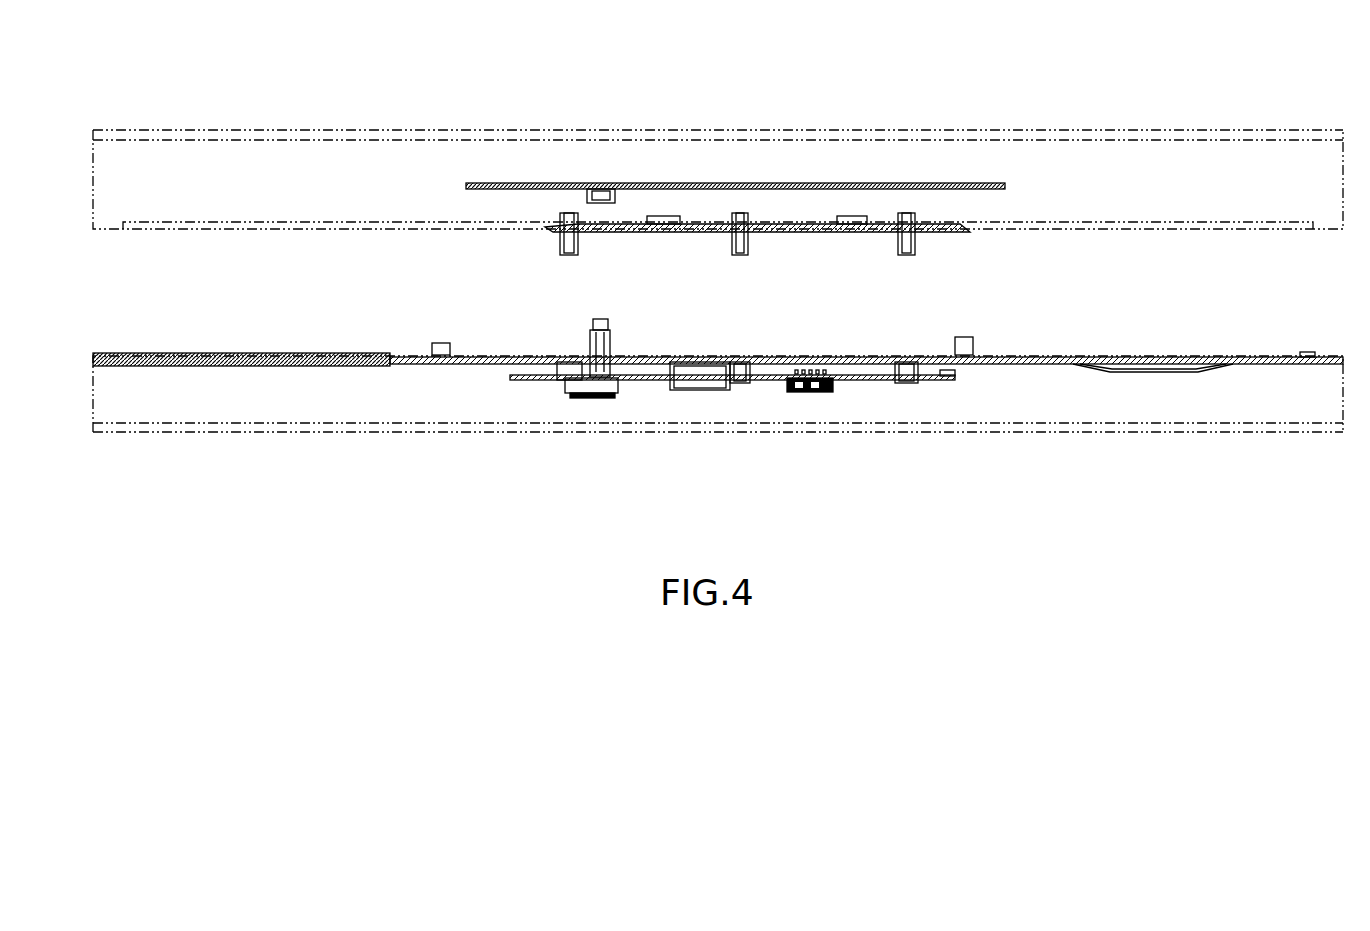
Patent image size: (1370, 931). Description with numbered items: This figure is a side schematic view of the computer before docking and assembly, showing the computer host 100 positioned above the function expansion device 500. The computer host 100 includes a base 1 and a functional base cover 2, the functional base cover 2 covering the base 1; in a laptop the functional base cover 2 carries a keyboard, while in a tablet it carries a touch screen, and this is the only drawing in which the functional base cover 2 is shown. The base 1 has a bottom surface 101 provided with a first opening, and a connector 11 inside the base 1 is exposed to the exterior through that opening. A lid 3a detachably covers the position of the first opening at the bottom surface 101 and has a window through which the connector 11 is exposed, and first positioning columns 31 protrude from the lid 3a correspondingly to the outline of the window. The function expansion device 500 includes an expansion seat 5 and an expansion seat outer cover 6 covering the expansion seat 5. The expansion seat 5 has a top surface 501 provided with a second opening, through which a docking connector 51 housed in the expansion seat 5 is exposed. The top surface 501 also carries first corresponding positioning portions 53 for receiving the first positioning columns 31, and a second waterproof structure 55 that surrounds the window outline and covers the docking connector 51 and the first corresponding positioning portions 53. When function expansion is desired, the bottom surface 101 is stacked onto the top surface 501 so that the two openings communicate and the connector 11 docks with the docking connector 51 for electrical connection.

The computer host 100 is at (120, 55).
The base 1 is at (177, 157).
The functional base cover 2 is at (247, 133).
The bottom surface 101 is at (306, 228).
The connector 11 is at (600, 203).
The lid 3a is at (948, 232).
The first positioning columns 31 is at (915, 248).
The function expansion device 500 is at (215, 507).
The expansion seat 5 is at (177, 407).
The expansion seat outer cover 6 is at (247, 430).
The top surface 501 is at (480, 353).
The docking connector 51 is at (590, 335).
The first corresponding positioning portions 53 is at (908, 372).
The second waterproof structure 55 is at (993, 355).